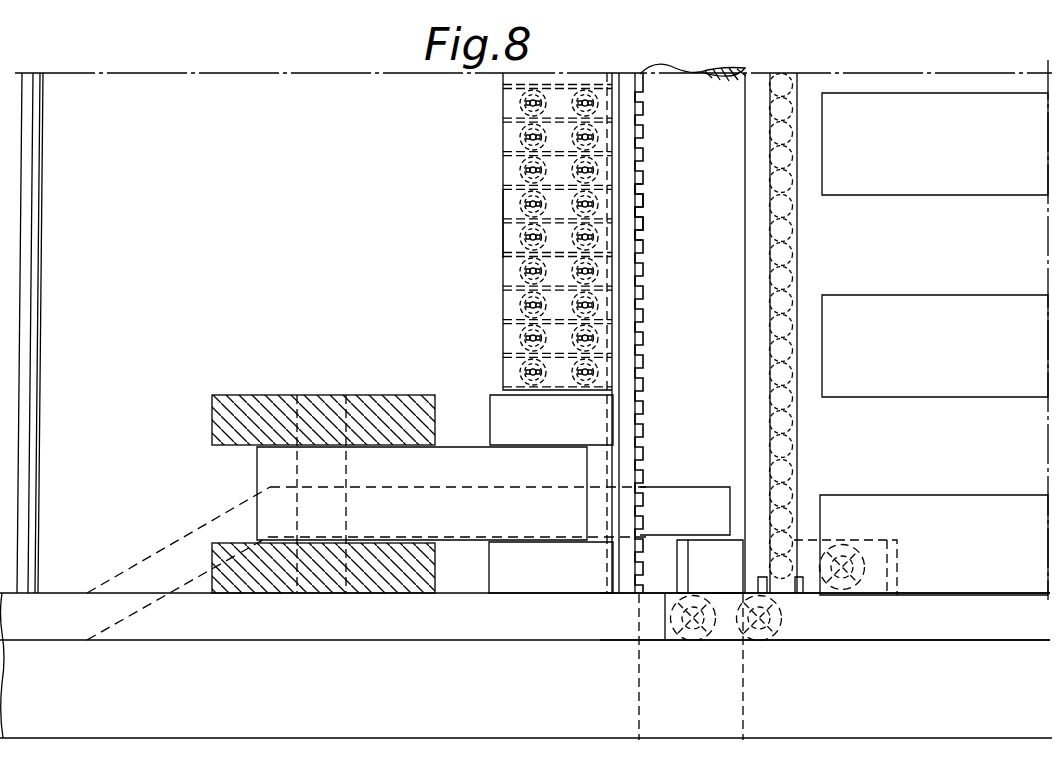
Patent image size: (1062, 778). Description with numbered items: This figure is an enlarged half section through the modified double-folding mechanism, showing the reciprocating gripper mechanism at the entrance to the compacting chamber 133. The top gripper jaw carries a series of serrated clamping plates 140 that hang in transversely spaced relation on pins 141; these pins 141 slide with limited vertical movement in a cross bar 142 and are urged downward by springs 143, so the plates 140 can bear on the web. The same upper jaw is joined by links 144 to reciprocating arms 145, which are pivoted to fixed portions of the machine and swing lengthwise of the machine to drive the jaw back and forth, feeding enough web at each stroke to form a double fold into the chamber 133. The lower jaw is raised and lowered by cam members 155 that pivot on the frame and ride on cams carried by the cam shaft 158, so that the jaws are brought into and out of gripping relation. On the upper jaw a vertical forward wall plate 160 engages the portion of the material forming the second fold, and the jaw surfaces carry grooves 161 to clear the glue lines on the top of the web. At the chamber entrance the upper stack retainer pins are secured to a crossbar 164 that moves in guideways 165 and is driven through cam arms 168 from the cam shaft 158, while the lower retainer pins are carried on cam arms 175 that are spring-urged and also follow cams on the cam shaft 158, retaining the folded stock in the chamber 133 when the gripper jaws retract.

The compacting chamber 133 is at (966, 267).
The serrated clamping plates 140 is at (508, 378).
The pins 141 is at (577, 305).
The cross bar 142 is at (503, 208).
The springs 143 is at (520, 165).
The links 144 is at (462, 470).
The reciprocating arms 145 is at (352, 400).
The cam members 155 is at (680, 500).
The cam shaft 158 is at (693, 328).
The vertical forward face or wall plate 160 is at (645, 285).
The grooves 161 is at (642, 245).
The crossbar 164 is at (799, 241).
The guideways 165 is at (798, 595).
The cam arms 168 is at (887, 630).
The cam arms 175 is at (720, 568).